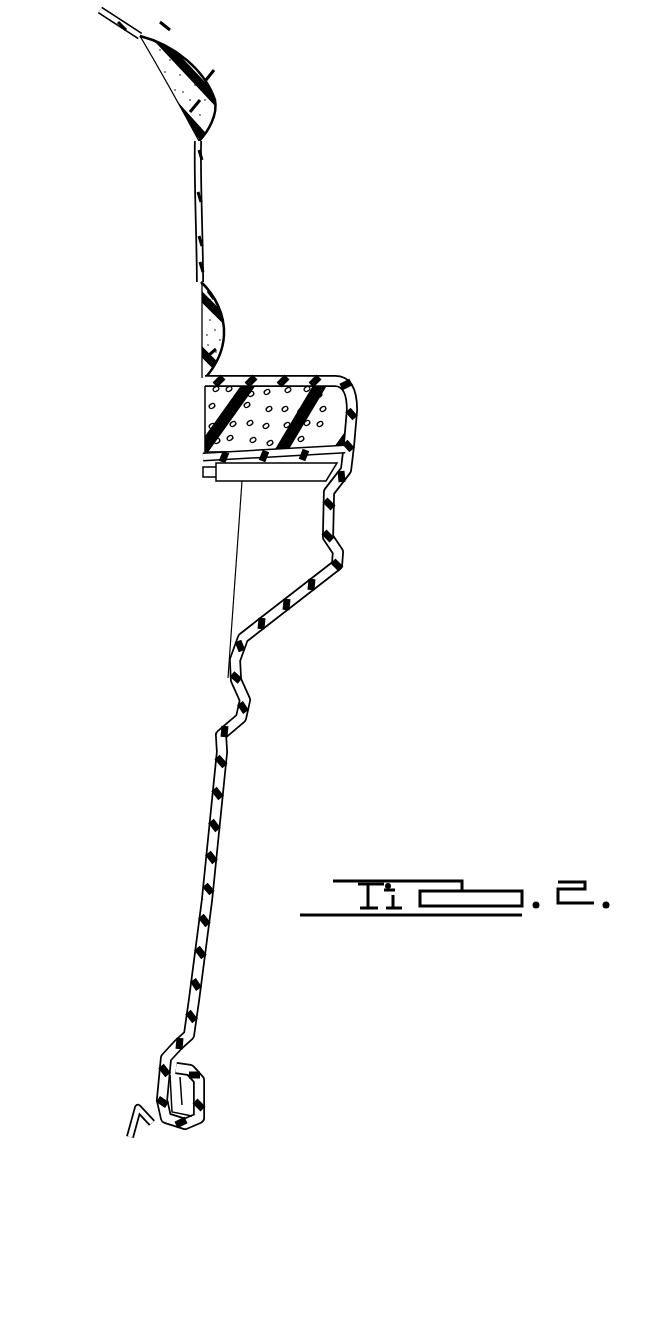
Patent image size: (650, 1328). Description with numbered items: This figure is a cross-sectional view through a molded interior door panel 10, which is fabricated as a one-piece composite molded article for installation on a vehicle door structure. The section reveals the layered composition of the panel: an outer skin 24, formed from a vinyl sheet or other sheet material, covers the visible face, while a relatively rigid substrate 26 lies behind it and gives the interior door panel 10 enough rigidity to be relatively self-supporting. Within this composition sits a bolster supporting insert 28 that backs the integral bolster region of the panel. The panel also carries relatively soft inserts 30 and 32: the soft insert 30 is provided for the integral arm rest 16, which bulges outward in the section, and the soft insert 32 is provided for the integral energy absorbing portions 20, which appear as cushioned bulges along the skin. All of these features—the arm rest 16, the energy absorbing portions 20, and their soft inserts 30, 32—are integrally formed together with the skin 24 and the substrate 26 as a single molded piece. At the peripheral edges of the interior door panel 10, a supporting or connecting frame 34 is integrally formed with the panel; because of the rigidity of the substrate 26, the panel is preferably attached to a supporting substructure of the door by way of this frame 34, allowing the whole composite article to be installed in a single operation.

The molded interior door panel 10 is at (246, 224).
The integral arm rest 16 is at (358, 393).
The integral energy absorbing portions 20 is at (204, 82).
The outer skin 24 is at (290, 610).
The rigid substrate 26 is at (275, 600).
The bolster supporting insert 28 is at (270, 520).
The soft insert 30 is at (228, 420).
The soft insert 32 is at (190, 97).
The supporting or connecting frame 34 is at (172, 1090).